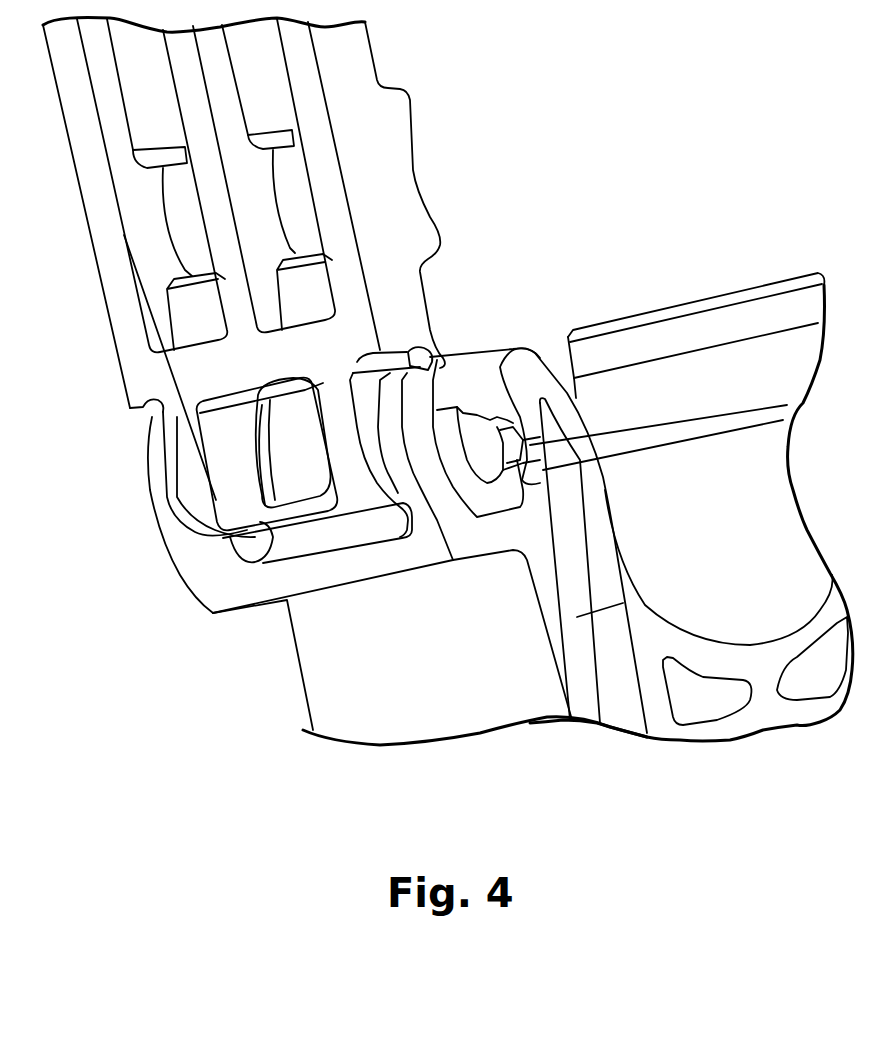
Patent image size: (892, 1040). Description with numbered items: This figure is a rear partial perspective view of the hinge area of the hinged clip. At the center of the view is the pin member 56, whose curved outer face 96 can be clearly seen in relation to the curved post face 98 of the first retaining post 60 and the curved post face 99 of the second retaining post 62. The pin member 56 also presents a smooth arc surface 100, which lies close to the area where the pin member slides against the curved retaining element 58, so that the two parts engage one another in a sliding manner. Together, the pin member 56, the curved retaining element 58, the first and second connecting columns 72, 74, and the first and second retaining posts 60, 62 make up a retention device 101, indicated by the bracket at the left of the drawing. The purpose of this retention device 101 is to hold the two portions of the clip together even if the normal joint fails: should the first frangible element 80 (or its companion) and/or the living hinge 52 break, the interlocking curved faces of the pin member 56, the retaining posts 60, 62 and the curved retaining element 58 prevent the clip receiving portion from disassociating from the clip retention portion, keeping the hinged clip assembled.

The living hinge 52 is at (513, 417).
The pin member 56 is at (330, 500).
The curved retaining element 58 is at (300, 447).
The first retaining post 60 is at (415, 420).
The second retaining post 62 is at (157, 498).
The first connecting column 72 is at (348, 427).
The second connecting column 74 is at (190, 433).
The first frangible element 80 is at (390, 440).
The curved outer face 96 is at (463, 437).
The curved post face 98 is at (442, 397).
The curved post face 99 is at (237, 548).
The smooth arc surface 100 is at (310, 487).
The retention device 101 is at (43, 396).